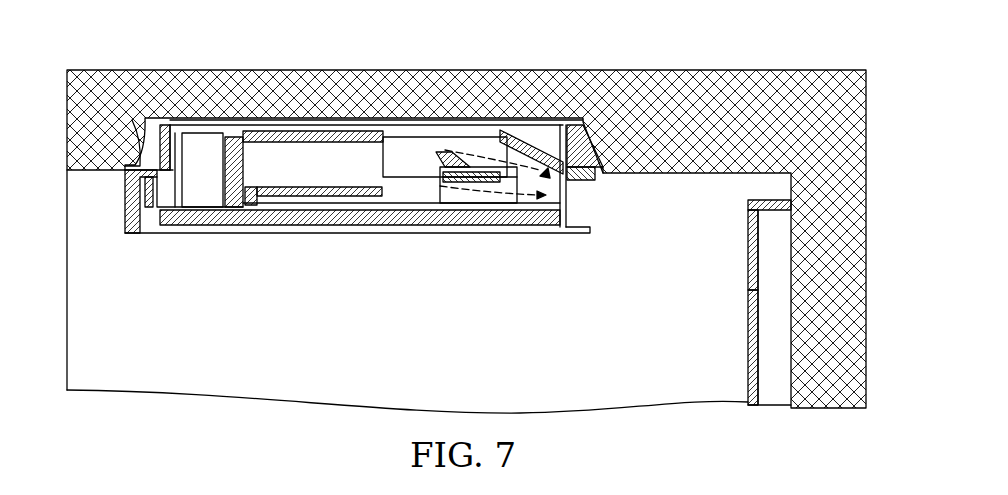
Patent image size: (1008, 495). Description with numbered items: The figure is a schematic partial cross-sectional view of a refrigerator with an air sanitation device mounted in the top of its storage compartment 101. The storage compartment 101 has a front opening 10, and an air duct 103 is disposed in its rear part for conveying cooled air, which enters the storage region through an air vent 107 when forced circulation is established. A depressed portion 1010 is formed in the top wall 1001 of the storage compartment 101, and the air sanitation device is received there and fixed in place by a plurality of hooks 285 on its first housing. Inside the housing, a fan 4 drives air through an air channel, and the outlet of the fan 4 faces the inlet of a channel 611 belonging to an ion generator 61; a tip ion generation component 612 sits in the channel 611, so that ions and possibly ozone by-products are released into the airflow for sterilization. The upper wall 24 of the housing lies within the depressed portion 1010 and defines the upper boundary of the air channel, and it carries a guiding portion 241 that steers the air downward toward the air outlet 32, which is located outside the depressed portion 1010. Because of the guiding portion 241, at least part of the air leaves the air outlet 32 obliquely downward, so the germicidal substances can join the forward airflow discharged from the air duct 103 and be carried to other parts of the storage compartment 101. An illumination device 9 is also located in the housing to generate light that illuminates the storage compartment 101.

The front opening 10 is at (68, 318).
The storage compartment 101 is at (448, 353).
The air duct 103 is at (767, 354).
The air vent 107 is at (748, 272).
The hooks 285 is at (143, 123).
The depressed portion 1010 is at (268, 120).
The top wall 1001 is at (437, 127).
The fan 4 is at (358, 140).
The upper wall 24 is at (435, 127).
The guiding portion 241 is at (497, 137).
The ion generator 61 is at (445, 147).
The channel 611 is at (443, 178).
The tip ion generation component 612 is at (490, 178).
The air outlet 32 is at (578, 191).
The illumination device 9 is at (257, 221).